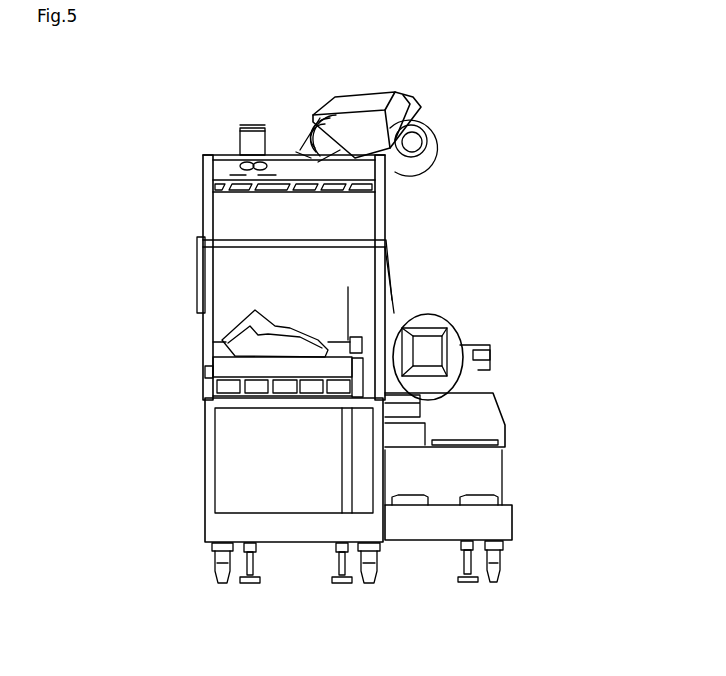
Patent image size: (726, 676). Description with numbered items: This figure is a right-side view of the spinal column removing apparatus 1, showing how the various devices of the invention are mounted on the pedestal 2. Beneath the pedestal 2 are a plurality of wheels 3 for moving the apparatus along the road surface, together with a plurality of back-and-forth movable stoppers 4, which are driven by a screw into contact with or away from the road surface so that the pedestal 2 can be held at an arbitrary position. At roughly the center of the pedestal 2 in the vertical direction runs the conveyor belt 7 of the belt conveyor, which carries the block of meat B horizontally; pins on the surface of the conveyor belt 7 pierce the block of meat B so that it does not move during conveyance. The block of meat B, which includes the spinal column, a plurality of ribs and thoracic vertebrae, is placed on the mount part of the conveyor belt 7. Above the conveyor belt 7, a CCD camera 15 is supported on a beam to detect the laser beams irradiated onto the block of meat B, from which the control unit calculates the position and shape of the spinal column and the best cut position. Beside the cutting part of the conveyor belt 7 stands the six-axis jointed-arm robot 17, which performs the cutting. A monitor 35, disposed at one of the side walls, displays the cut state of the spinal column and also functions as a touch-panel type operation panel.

The spinal column removing apparatus 1 is at (342, 354).
The pedestal 2 is at (222, 527).
The wheel 3 is at (221, 583).
The stopper 4 is at (341, 560).
The conveyor belt 7 is at (213, 365).
The block of meat B is at (213, 343).
The CCD camera 15 is at (253, 135).
The six-axis jointed-arm robot 17 is at (403, 93).
The monitor 35 is at (198, 282).